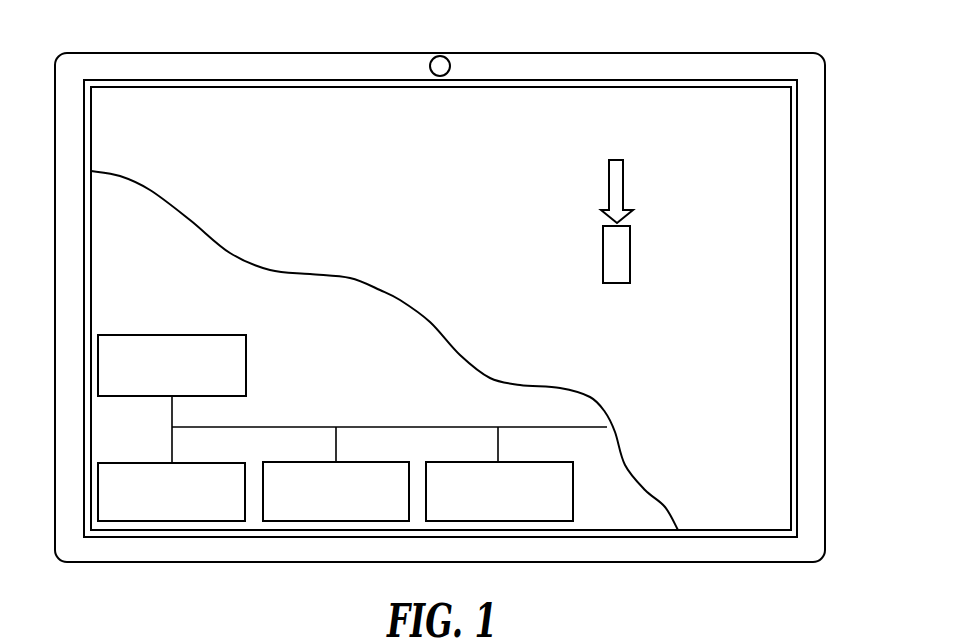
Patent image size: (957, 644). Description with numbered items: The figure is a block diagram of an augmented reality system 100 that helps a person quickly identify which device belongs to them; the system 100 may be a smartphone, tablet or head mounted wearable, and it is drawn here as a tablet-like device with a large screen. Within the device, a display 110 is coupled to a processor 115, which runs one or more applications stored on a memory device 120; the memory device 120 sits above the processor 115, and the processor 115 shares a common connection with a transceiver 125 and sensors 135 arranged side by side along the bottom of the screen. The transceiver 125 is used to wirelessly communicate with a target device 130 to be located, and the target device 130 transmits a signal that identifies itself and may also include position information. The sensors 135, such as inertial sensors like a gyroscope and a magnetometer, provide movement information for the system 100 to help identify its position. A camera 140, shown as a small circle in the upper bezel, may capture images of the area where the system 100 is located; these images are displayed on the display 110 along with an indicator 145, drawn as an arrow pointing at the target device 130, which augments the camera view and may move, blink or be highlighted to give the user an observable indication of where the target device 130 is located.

The augmented reality system 100 is at (729, 34).
The display 110 is at (762, 374).
The processor 115 is at (202, 463).
The memory device 120 is at (174, 334).
The transceiver 125 is at (365, 462).
The target device 130 is at (632, 255).
The sensors 135 is at (528, 462).
The camera 140 is at (436, 57).
The indicator 145 is at (626, 185).